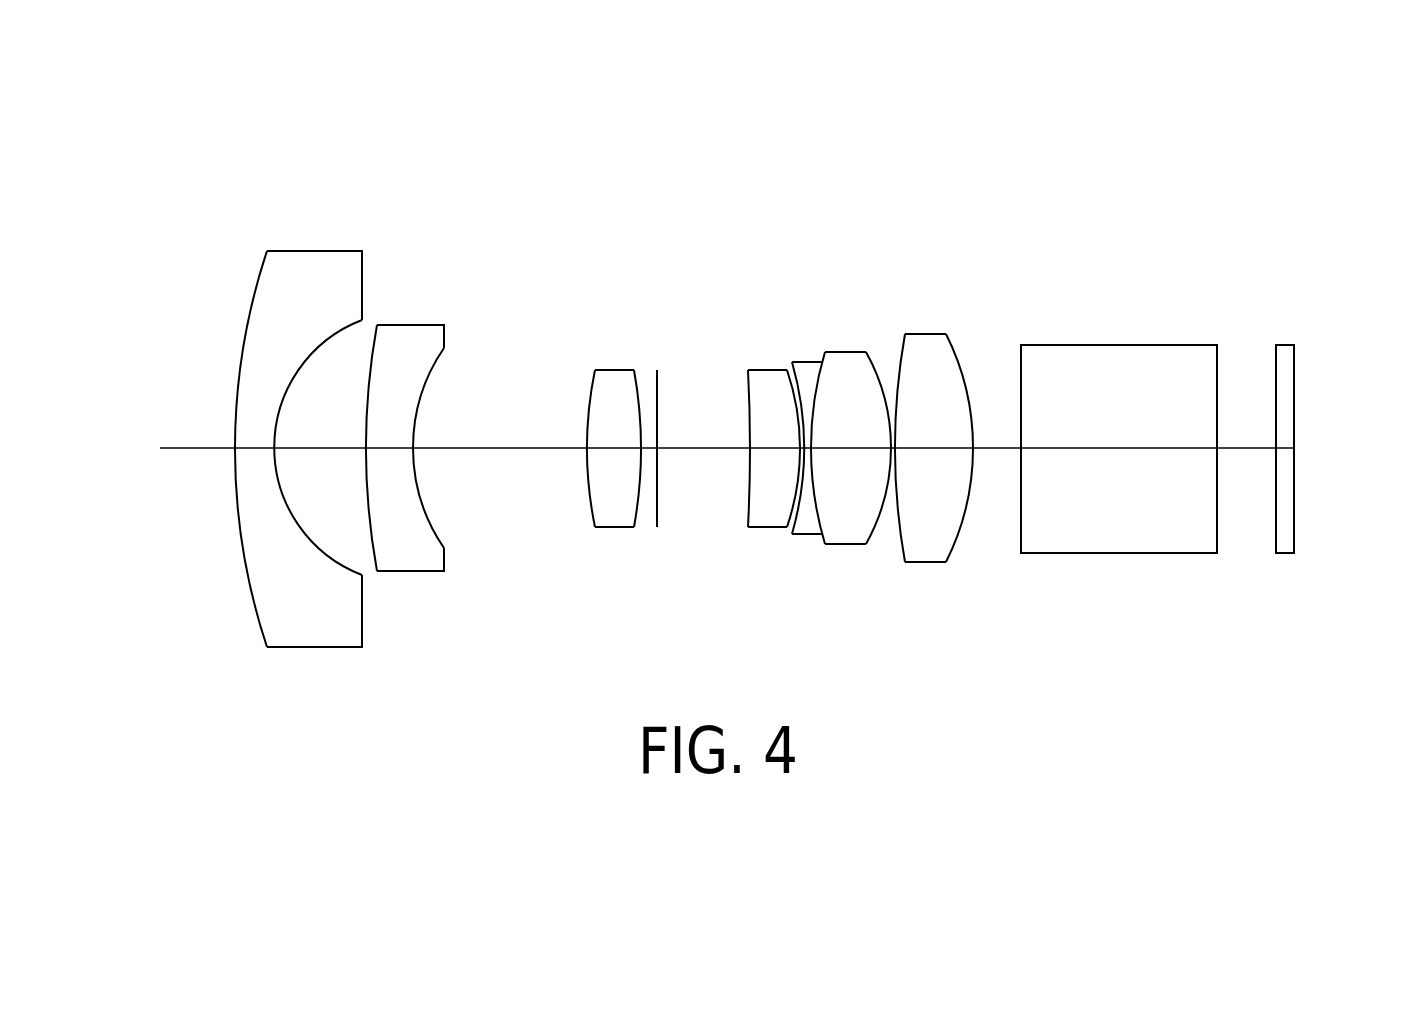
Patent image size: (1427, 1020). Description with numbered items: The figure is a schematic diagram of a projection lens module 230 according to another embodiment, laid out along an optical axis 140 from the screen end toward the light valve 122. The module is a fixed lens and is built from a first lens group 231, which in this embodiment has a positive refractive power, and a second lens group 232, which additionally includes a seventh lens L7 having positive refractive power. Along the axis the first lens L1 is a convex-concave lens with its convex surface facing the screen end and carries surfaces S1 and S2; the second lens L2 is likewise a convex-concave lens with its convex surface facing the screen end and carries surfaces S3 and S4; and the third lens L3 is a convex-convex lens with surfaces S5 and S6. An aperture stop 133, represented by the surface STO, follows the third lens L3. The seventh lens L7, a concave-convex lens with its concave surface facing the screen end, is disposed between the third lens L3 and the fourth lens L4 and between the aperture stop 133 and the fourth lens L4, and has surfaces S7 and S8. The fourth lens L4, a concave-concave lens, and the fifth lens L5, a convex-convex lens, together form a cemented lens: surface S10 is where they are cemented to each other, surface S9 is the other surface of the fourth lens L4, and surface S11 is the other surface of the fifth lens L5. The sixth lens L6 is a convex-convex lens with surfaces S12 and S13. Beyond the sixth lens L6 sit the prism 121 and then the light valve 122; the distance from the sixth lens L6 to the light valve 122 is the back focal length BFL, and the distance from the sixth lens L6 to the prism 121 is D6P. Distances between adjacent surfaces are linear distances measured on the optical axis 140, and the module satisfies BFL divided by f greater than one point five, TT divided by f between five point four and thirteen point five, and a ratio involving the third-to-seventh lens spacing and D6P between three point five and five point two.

The projection lens module 230 is at (875, 108).
The first lens group 231 is at (635, 177).
The second lens group 232 is at (955, 177).
The first lens L1 is at (312, 293).
The second lens L2 is at (407, 345).
The third lens L3 is at (613, 382).
The fourth lens L4 is at (810, 380).
The fifth lens L5 is at (848, 365).
The sixth lens L6 is at (918, 365).
The seventh lens L7 is at (757, 380).
The aperture stop 133 is at (672, 378).
The aperture stop surface STO is at (645, 492).
The prism 121 is at (1104, 367).
The light valve 122 is at (1283, 396).
The optical axis 140 is at (193, 450).
The surface of first lens S1 is at (256, 608).
The surface of first lens S2 is at (343, 565).
The surface of second lens S3 is at (372, 555).
The surface of second lens S4 is at (443, 530).
The surface of third lens S5 is at (590, 511).
The surface of third lens S6 is at (645, 510).
The surface of seventh lens S7 is at (747, 518).
The surface of seventh lens S8 is at (792, 533).
The surface of fourth lens S9 is at (802, 515).
The cemented surface S10 is at (831, 515).
The surface of fifth lens S11 is at (883, 543).
The surface of sixth lens S12 is at (907, 542).
The surface of sixth lens S13 is at (967, 546).